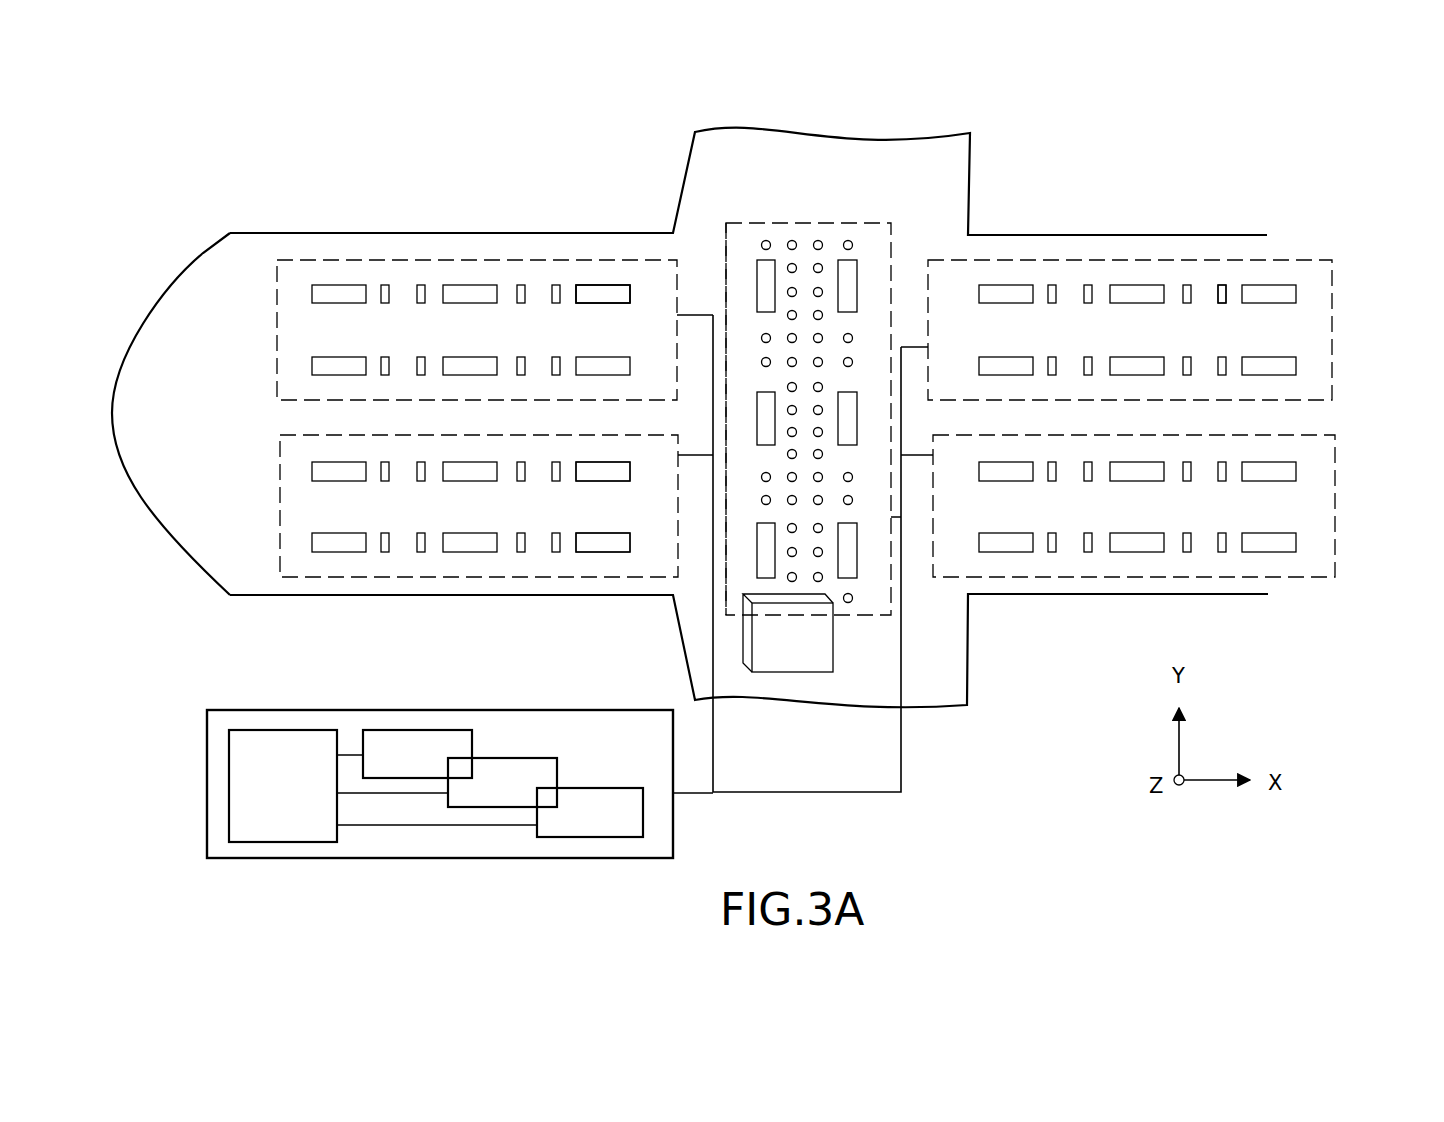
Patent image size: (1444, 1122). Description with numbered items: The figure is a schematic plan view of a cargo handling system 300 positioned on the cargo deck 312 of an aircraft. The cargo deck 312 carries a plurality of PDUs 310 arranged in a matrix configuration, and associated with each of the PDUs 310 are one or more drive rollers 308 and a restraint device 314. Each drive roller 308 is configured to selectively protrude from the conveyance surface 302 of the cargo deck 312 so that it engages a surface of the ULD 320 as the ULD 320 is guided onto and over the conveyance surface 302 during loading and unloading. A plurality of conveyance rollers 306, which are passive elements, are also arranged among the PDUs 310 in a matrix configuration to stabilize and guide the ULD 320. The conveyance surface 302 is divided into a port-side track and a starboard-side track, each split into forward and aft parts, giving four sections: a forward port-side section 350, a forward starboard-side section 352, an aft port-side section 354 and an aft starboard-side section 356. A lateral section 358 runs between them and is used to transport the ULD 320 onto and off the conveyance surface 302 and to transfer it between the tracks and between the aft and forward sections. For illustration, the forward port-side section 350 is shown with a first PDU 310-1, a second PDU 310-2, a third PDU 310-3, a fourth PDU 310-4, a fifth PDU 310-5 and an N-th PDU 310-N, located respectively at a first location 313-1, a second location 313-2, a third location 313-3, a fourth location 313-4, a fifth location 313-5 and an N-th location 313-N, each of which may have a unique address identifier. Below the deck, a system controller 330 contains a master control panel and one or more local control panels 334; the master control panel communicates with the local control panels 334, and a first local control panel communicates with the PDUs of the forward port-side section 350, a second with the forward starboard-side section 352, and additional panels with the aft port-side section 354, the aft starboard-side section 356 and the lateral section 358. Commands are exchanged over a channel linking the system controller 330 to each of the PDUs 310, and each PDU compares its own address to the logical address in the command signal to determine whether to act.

The cargo handling system 300 is at (257, 146).
The conveyance surface 302 is at (984, 346).
The conveyance rollers 306 is at (1222, 293).
The drive rollers 308 is at (625, 288).
The PDUs 310 is at (392, 236).
The first PDU 310-1 is at (327, 462).
The second PDU 310-2 is at (462, 462).
The third PDU 310-3 is at (587, 462).
The fourth PDU 310-4 is at (360, 552).
The fifth PDU 310-5 is at (498, 552).
The N-th PDU 310-N is at (614, 552).
The cargo deck 312 is at (536, 293).
The first location 313-1 is at (378, 492).
The second location 313-2 is at (514, 492).
The third location 313-3 is at (620, 455).
The fourth location 313-4 is at (376, 560).
The fifth location 313-5 is at (512, 560).
The N-th location 313-N is at (639, 528).
The restraint device 314 is at (582, 288).
The ULD 320 is at (771, 665).
The system controller 330 is at (207, 759).
The local control panels 334 is at (472, 748).
The forward port-side section 350 is at (281, 507).
The forward starboard-side section 352 is at (280, 350).
The aft port-side section 354 is at (1335, 488).
The aft starboard-side section 356 is at (1332, 330).
The lateral section 358 is at (732, 223).